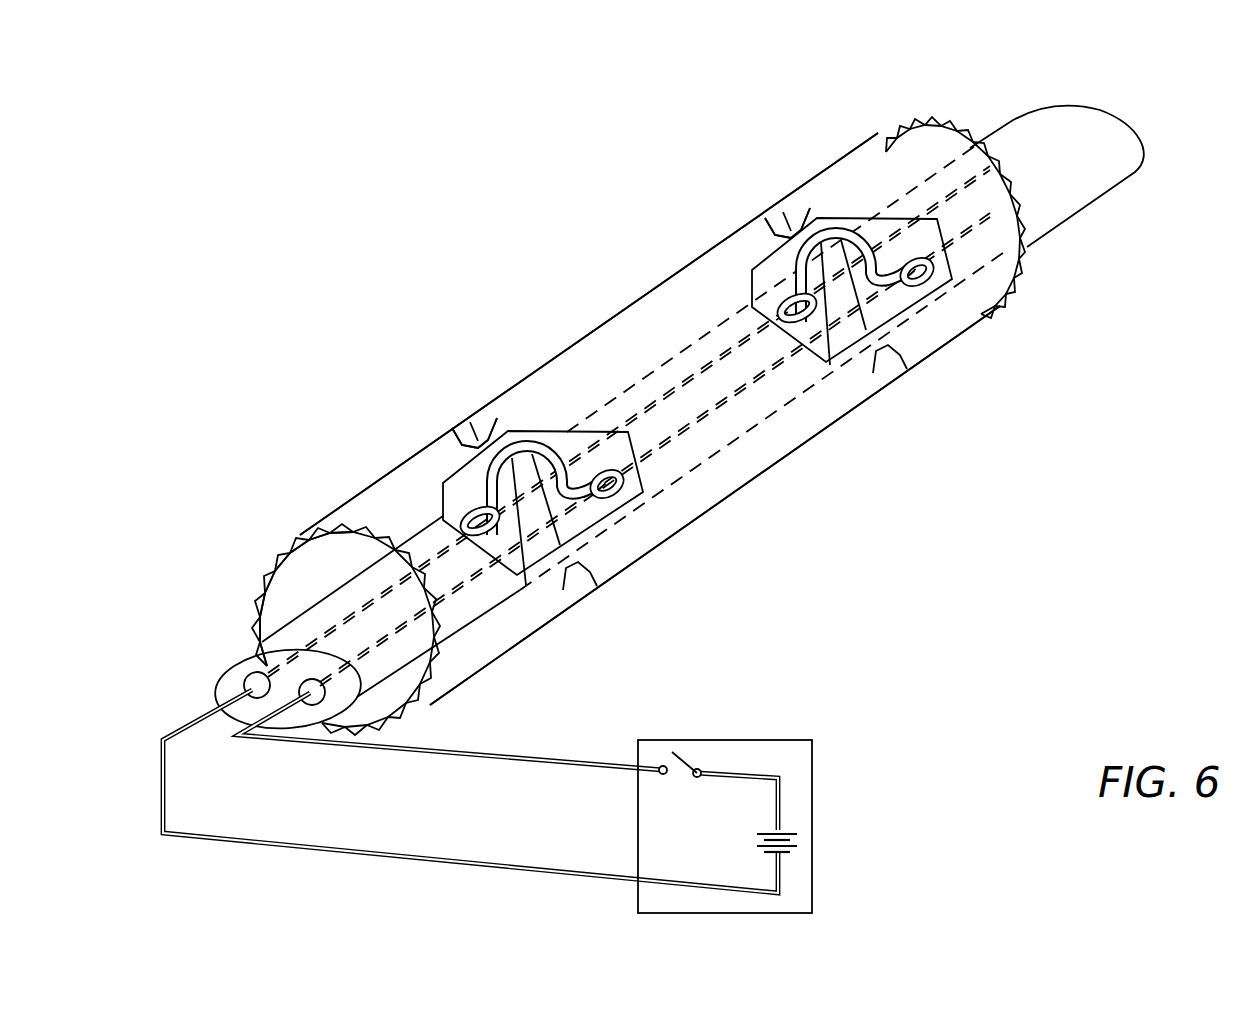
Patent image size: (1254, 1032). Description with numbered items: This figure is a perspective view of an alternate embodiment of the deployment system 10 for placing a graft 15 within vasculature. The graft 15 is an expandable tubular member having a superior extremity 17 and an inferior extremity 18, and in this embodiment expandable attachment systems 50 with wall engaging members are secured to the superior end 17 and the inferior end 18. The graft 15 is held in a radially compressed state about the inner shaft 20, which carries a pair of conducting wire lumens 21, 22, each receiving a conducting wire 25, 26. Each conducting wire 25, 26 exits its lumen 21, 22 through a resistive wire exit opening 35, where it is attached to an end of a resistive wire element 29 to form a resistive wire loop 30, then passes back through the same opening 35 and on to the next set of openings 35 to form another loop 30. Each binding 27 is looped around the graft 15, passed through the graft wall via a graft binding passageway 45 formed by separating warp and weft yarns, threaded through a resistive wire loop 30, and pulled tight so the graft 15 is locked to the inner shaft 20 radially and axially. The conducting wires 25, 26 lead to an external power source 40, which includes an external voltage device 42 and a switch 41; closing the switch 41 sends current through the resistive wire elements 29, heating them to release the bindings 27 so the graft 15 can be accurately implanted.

The deployment system 10 is at (468, 232).
The graft 15 is at (556, 298).
The superior extremity 17 is at (212, 558).
The inferior extremity 18 is at (958, 104).
The inner shaft 20 is at (230, 646).
The conducting wire lumen 21 is at (244, 678).
The conducting wire lumen 22 is at (318, 702).
The conducting wire 25 is at (283, 884).
The conducting wire 26 is at (598, 748).
The binding 27 is at (452, 397).
The resistive wire element 29 is at (528, 590).
The resistive wire loop 30 is at (521, 442).
The resistive wire exit opening 35 is at (452, 530).
The external power source 40 is at (818, 765).
The switch 41 is at (688, 755).
The external voltage device 42 is at (797, 842).
The graft binding passageway 45 is at (460, 436).
The expandable attachment system 50 is at (264, 516).